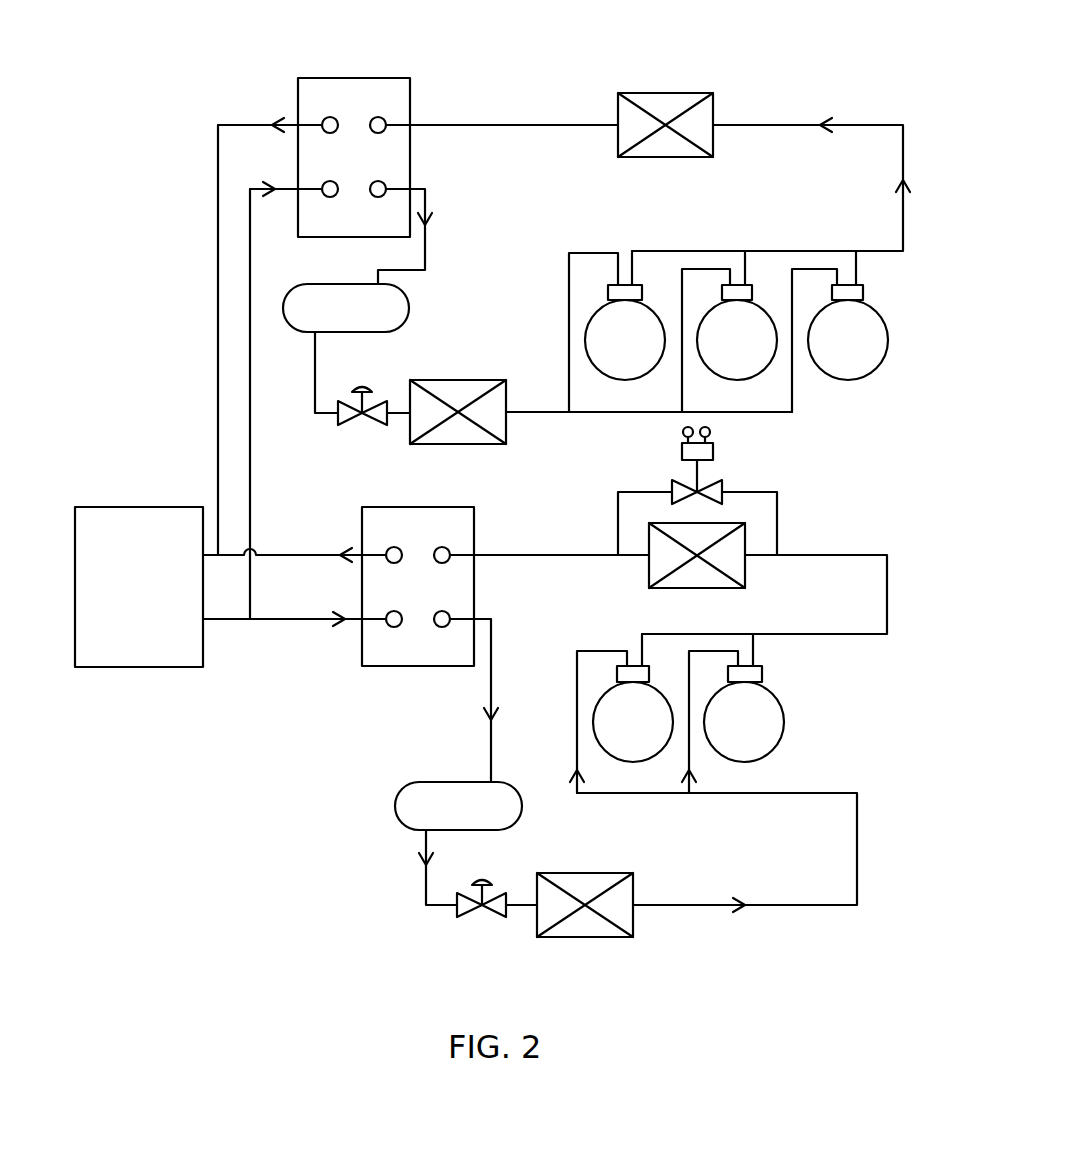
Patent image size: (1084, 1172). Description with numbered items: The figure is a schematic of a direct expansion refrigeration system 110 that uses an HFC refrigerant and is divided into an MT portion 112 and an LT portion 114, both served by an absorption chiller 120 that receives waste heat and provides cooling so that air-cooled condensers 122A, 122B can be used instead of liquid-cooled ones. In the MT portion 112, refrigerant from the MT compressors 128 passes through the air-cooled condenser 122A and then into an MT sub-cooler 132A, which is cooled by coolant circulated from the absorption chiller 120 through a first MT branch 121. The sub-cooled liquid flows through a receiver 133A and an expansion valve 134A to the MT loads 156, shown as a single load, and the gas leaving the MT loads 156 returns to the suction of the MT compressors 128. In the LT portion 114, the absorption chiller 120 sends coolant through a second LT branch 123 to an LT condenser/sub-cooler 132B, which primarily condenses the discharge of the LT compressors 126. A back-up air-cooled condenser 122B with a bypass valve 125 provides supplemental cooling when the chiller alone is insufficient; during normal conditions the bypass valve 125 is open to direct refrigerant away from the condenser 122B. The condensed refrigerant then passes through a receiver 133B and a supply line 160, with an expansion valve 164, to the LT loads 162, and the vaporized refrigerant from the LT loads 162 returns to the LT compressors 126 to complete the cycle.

The direct expansion refrigeration system 110 is at (803, 33).
The MT portion 112 is at (858, 440).
The LT portion 114 is at (345, 755).
The absorption chiller 120 is at (110, 507).
The first MT branch 121 is at (250, 452).
The second LT branch 123 is at (273, 620).
The air-cooled condenser 122A is at (668, 157).
The air-cooled condenser 122B is at (745, 580).
The bypass valve 125 is at (722, 484).
The LT compressors 126 is at (783, 742).
The MT compressors 128 is at (878, 310).
The MT sub-cooler 132A is at (410, 92).
The LT condenser/sub-cooler 132B is at (378, 667).
The receiver 133A is at (409, 308).
The receiver 133B is at (395, 806).
The expansion valve 134A is at (315, 360).
The MT loads 156 is at (474, 380).
The supply line 160 is at (426, 889).
The LT loads 162 is at (612, 938).
The expansion valve 164 is at (490, 916).